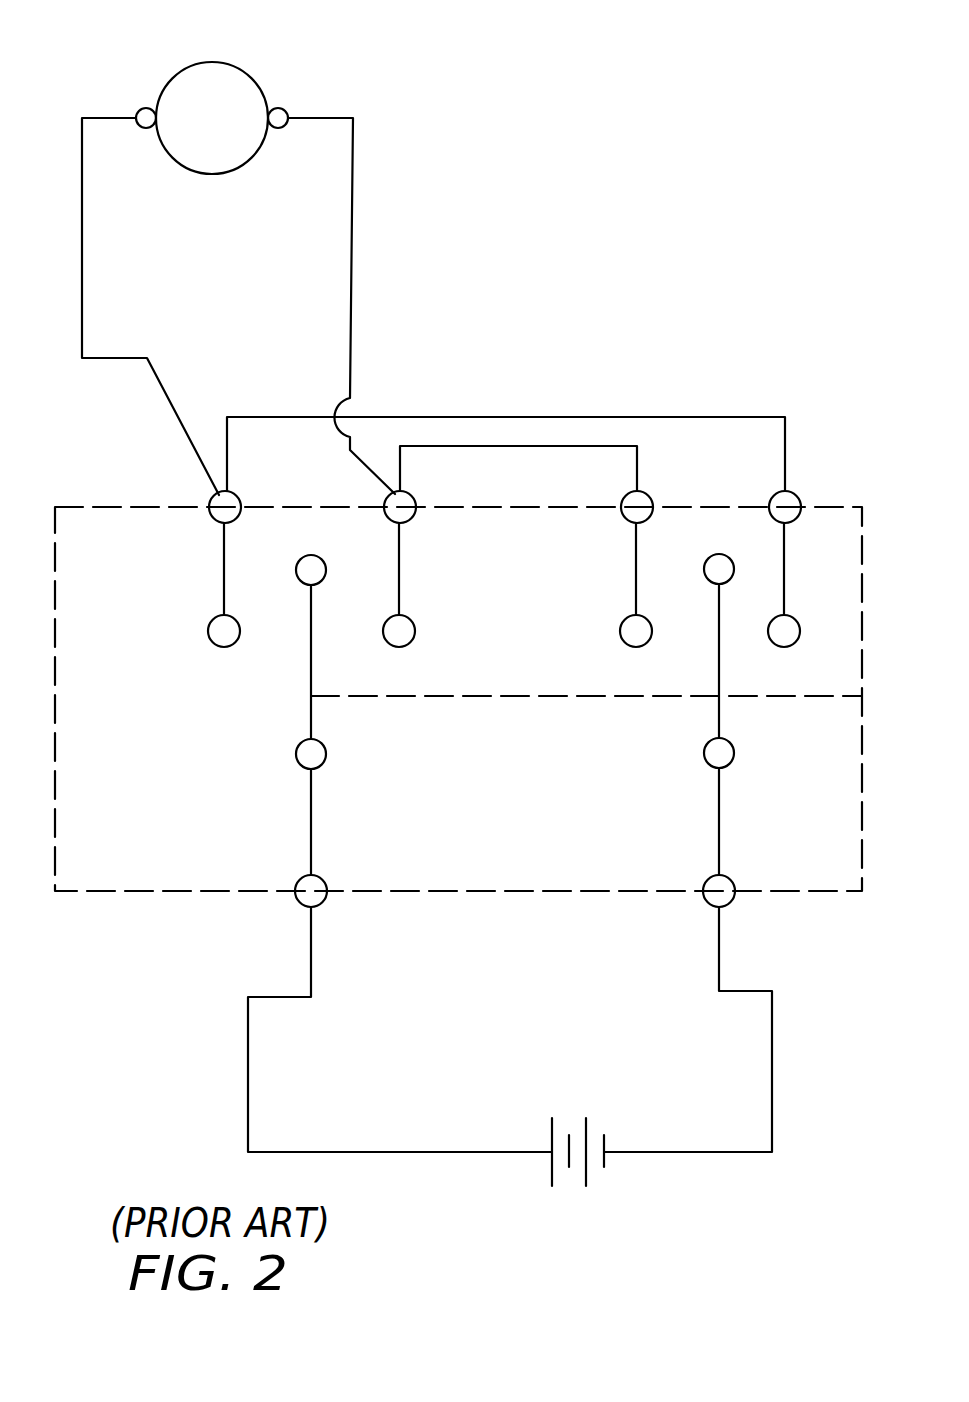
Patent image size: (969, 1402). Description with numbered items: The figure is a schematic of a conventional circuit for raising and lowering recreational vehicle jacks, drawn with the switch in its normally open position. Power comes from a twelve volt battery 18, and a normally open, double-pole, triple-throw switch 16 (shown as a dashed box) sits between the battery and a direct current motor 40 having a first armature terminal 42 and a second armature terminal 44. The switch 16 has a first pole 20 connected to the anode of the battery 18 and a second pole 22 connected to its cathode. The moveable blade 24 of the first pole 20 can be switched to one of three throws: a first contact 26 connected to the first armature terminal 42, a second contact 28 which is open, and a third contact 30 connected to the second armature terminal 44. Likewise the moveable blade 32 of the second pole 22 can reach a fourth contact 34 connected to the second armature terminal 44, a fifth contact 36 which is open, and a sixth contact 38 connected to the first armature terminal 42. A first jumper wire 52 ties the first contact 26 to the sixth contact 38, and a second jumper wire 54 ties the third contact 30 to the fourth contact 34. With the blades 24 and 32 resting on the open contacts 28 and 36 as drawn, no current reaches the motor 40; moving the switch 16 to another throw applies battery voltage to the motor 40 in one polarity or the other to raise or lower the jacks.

The switch 16 is at (55, 852).
The battery 18 is at (551, 1128).
The first pole 20 is at (301, 878).
The second pole 22 is at (726, 873).
The moveable blade 24 is at (305, 665).
The first contact 26 is at (207, 628).
The second contact 28 is at (322, 557).
The third contact 30 is at (413, 622).
The moveable blade 32 is at (719, 720).
The fourth contact 34 is at (622, 620).
The fifth contact 36 is at (712, 555).
The sixth contact 38 is at (799, 630).
The DC motor 40 is at (219, 175).
The first armature terminal 42 is at (138, 108).
The second armature terminal 44 is at (276, 108).
The first jumper wire 52 is at (242, 417).
The second jumper wire 54 is at (500, 445).